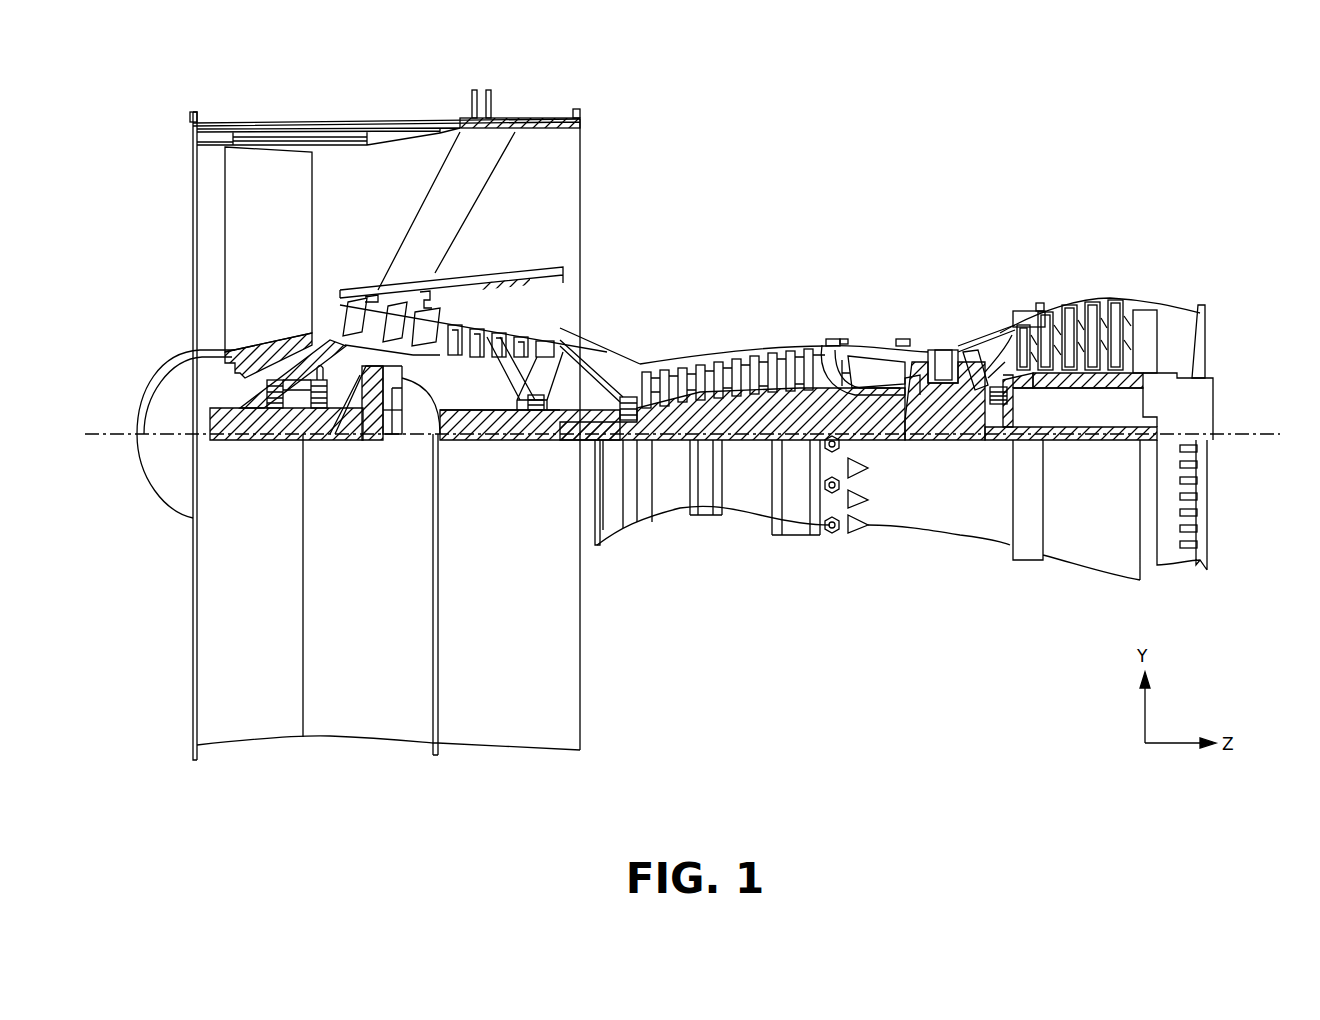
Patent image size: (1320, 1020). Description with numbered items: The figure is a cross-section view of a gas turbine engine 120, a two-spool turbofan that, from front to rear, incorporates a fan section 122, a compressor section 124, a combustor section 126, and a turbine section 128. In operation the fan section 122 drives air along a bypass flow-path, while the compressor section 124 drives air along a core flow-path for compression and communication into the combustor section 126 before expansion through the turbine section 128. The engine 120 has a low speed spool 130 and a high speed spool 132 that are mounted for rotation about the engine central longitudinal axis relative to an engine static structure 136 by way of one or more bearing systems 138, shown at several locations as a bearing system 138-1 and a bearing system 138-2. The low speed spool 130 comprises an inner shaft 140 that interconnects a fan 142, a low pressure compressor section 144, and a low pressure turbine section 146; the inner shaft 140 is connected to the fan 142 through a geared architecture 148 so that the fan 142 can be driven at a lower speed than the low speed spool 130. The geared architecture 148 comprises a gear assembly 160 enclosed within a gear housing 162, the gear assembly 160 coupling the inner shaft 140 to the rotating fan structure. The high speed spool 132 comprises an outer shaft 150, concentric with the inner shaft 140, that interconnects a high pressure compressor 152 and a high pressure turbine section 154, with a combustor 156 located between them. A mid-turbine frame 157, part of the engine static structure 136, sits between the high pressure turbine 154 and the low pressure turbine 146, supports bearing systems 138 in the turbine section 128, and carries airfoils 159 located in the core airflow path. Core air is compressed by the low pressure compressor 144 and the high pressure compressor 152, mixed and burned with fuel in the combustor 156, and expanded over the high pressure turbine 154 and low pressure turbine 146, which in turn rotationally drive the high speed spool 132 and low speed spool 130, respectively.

The gas turbine engine 120 is at (718, 122).
The fan section 122 is at (432, 103).
The compressor section 124 is at (443, 234).
The combustor section 126 is at (925, 234).
The turbine section 128 is at (1145, 234).
The low speed spool 130 is at (749, 460).
The high speed spool 132 is at (782, 398).
The engine static structure 136 is at (805, 525).
The bearing system 138 is at (984, 440).
The bearing system 138-1 is at (276, 425).
The bearing system 138-2 is at (540, 437).
The inner shaft 140 is at (620, 440).
The fan 142 is at (268, 249).
The low pressure compressor section 144 is at (552, 322).
The low pressure turbine section 146 is at (1078, 305).
The geared architecture 148 is at (400, 458).
The outer shaft 150 is at (884, 436).
The high pressure compressor 152 is at (728, 364).
The high pressure turbine section 154 is at (940, 348).
The combustor 156 is at (870, 366).
The mid-turbine frame 157 is at (972, 348).
The airfoils 159 is at (990, 345).
The gear assembly 160 is at (390, 445).
The gear housing 162 is at (408, 385).